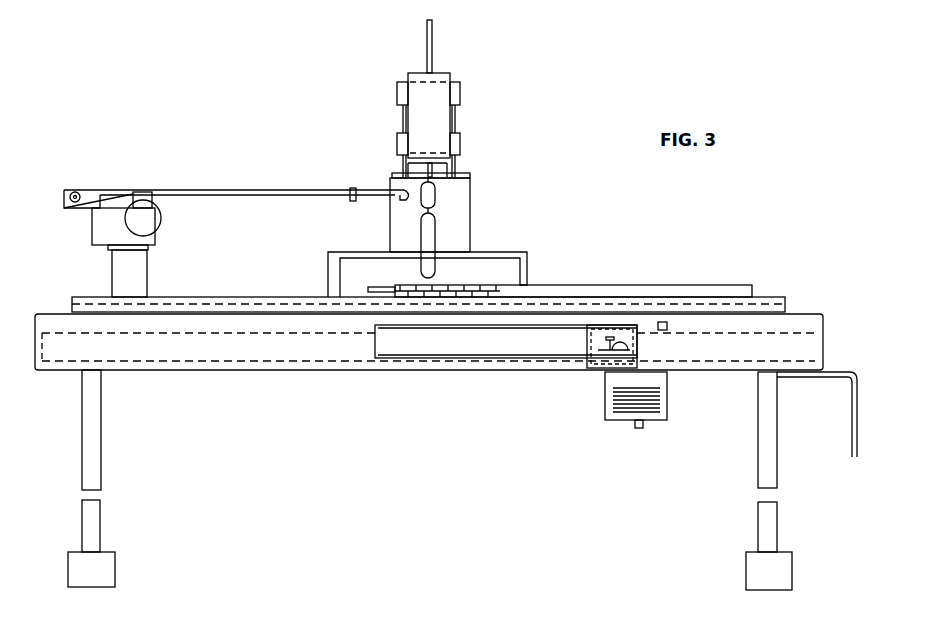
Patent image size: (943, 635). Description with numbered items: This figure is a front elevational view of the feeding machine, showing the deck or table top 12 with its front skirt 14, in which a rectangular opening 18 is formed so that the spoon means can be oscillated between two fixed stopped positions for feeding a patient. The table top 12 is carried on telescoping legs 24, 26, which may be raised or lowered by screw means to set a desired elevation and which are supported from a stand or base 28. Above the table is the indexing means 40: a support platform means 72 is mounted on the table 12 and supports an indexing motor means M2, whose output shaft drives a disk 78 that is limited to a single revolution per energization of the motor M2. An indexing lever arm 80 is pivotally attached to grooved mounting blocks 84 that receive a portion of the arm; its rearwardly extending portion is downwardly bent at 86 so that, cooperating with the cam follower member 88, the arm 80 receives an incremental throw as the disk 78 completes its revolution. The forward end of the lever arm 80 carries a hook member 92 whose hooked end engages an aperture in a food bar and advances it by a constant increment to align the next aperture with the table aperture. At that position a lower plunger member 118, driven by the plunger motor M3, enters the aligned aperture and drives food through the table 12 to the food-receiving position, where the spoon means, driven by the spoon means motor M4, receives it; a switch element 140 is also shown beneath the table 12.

The table top 12 is at (802, 313).
The front skirt 14 is at (267, 370).
The rectangular opening 18 is at (417, 352).
The telescoping leg 24 is at (98, 422).
The telescoping leg 26 is at (100, 515).
The stand or base 28 is at (115, 565).
The indexing means 40 is at (224, 202).
The support platform means 72 is at (142, 277).
The disk 78 is at (157, 218).
The indexing lever arm 80 is at (253, 193).
The mounting blocks 84 is at (143, 191).
The downwardly bent portion 86 is at (75, 212).
The cam follower member 88 is at (78, 193).
The hook member 92 is at (372, 195).
The lower plunger member 118 is at (432, 232).
The switch 140 is at (637, 357).
The indexing motor means M2 is at (93, 257).
The motor M3 is at (470, 116).
The spoon means motor M4 is at (597, 415).